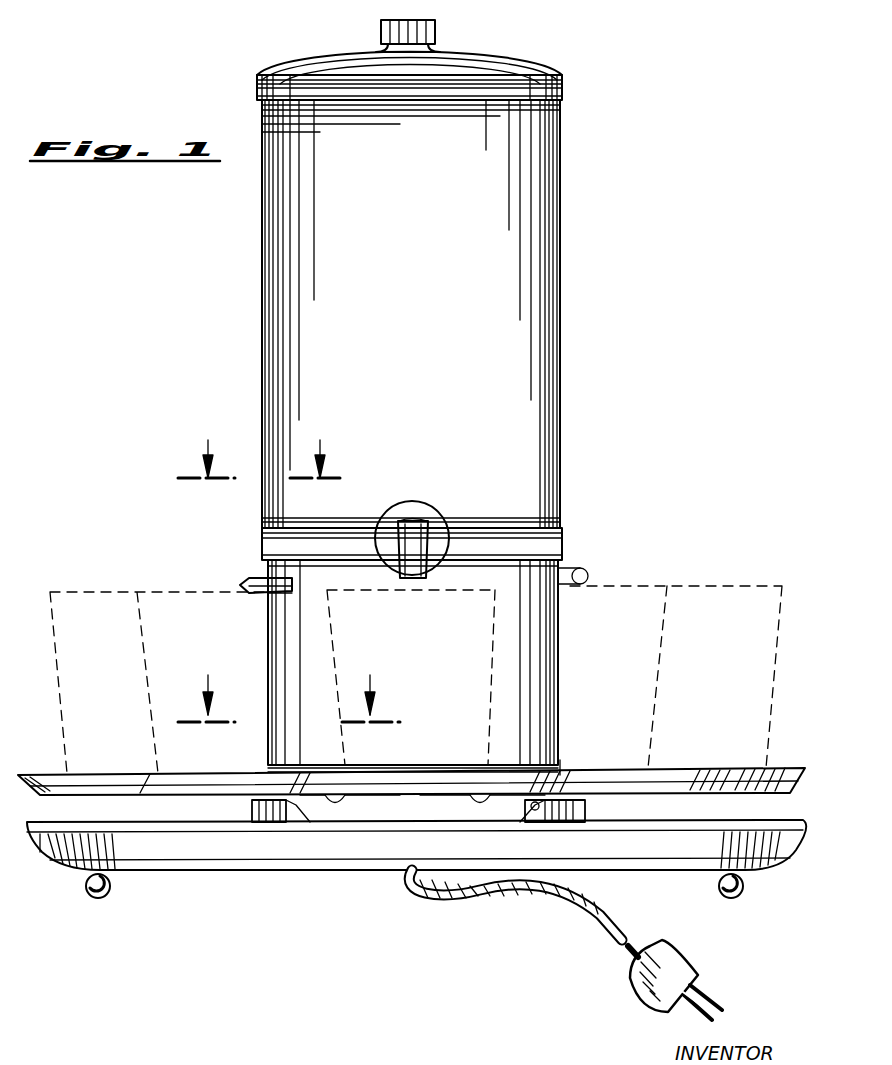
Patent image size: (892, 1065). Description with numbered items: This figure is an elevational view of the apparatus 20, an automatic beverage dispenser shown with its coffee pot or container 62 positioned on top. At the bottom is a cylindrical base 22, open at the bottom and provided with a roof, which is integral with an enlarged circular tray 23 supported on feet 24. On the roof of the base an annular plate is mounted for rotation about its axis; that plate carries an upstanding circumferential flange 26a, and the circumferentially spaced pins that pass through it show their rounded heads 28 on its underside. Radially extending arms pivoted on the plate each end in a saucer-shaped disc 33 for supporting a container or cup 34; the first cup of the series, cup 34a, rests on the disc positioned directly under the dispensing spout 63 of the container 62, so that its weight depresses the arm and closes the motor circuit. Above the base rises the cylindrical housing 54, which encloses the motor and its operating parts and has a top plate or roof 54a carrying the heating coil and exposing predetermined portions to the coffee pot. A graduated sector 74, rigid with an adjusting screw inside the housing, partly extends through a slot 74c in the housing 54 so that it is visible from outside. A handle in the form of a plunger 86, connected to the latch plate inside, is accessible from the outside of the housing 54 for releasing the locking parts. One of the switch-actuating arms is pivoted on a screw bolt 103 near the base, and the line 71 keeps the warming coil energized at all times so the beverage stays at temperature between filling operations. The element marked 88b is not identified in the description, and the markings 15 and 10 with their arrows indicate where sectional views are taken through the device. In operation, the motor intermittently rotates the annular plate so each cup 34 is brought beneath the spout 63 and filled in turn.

The apparatus 20 is at (412, 520).
The coffee pot or container 62 is at (556, 488).
The dispensing spout 63 is at (425, 524).
The cylindrical housing 54 is at (461, 640).
The top plate or roof 54a is at (565, 547).
The plunger handle 86 is at (584, 571).
The graduated sector 74 is at (246, 586).
The slot 74c is at (270, 597).
The cup 34a is at (425, 665).
The container or cup 34 is at (52, 660).
The saucer-shaped disc 33 is at (722, 768).
The upstanding circumferential flange 26a is at (560, 775).
The connector 88b is at (440, 772).
The circular tray 23 is at (235, 848).
The cylindrical base 22 is at (250, 812).
The rounded heads 28 is at (340, 800).
The screw bolt 103 is at (540, 808).
The feet 24 is at (98, 898).
The line 71 is at (630, 968).
The section line 15 is at (261, 473).
The section line 10 is at (289, 713).